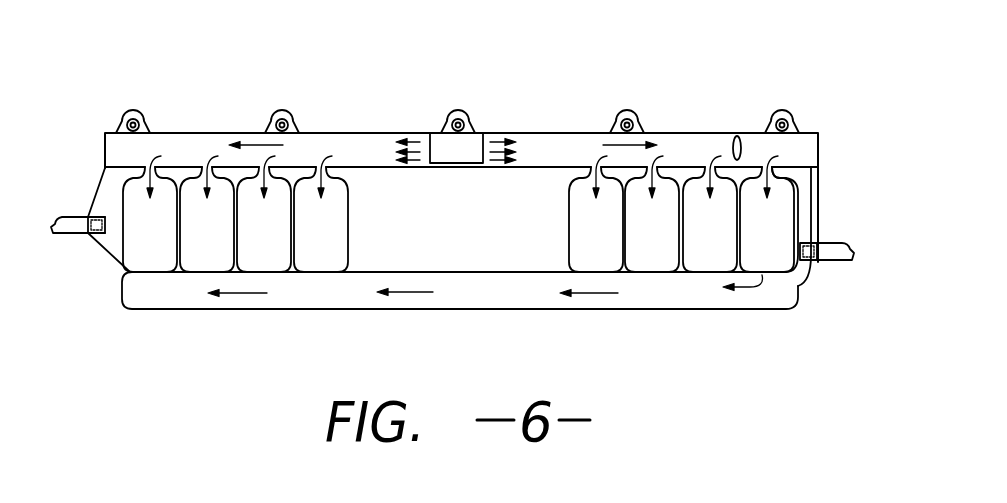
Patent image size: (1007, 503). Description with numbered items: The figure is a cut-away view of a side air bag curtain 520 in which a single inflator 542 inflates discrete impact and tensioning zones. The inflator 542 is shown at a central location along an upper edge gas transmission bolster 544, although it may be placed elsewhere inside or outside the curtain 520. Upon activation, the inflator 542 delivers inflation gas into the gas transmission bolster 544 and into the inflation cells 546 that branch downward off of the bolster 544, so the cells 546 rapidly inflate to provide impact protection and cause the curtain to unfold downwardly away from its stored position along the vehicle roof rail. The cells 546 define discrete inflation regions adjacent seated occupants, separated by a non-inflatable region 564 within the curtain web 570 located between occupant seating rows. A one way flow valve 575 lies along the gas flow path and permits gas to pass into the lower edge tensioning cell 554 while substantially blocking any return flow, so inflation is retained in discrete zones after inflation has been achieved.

The air bag curtain 520 is at (591, 84).
The inflator 542 is at (470, 147).
The upper edge gas transmission bolster 544 is at (360, 147).
The inflation cells 546 is at (788, 237).
The lower edge tensioning cell 554 is at (691, 310).
The non-inflatable region 564 is at (436, 237).
The curtain web 570 is at (820, 185).
The one way flow valve 575 is at (732, 146).